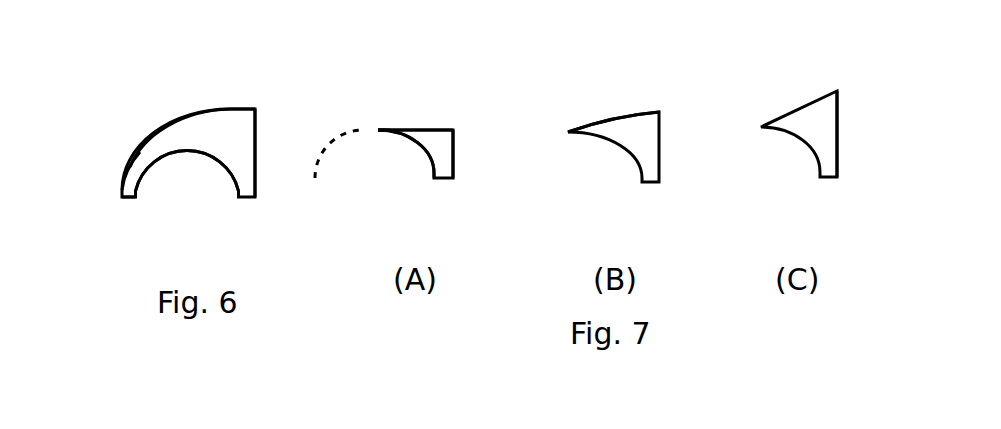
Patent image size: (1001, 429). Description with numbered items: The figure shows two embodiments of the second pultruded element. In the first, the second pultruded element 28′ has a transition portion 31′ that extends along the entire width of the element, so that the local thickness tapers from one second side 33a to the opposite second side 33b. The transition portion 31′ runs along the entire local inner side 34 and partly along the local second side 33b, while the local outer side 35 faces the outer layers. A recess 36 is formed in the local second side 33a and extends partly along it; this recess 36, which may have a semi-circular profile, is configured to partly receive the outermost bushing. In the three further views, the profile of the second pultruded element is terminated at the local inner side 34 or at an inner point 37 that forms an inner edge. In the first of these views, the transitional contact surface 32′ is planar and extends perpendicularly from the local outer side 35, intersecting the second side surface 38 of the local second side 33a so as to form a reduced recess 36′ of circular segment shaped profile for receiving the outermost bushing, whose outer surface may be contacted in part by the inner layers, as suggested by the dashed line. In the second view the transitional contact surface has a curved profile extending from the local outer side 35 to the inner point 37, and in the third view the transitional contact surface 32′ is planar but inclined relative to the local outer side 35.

In FIG. 6, the second pultruded element 28′ is at (102, 99).
In FIG. 6, the transition portion 31′ is at (173, 135).
In FIG. 7, the transitional contact surface 32′ is at (425, 129).
In FIG. 6, the second side 33a is at (126, 197).
In FIG. 6, the second side 33b is at (232, 108).
In FIG. 6, the local inner side 34 is at (100, 154).
In FIG. 6, the local outer side 35 is at (255, 150).
In FIG. 7, the local outer side 35 is at (453, 155).
In FIG. 6, the recess 36 is at (191, 201).
In FIG. 7, the reduced recess 36′ is at (389, 163).
In FIG. 7, the inner point 37 is at (377, 129).
In FIG. 7, the second side surface 38 is at (427, 162).